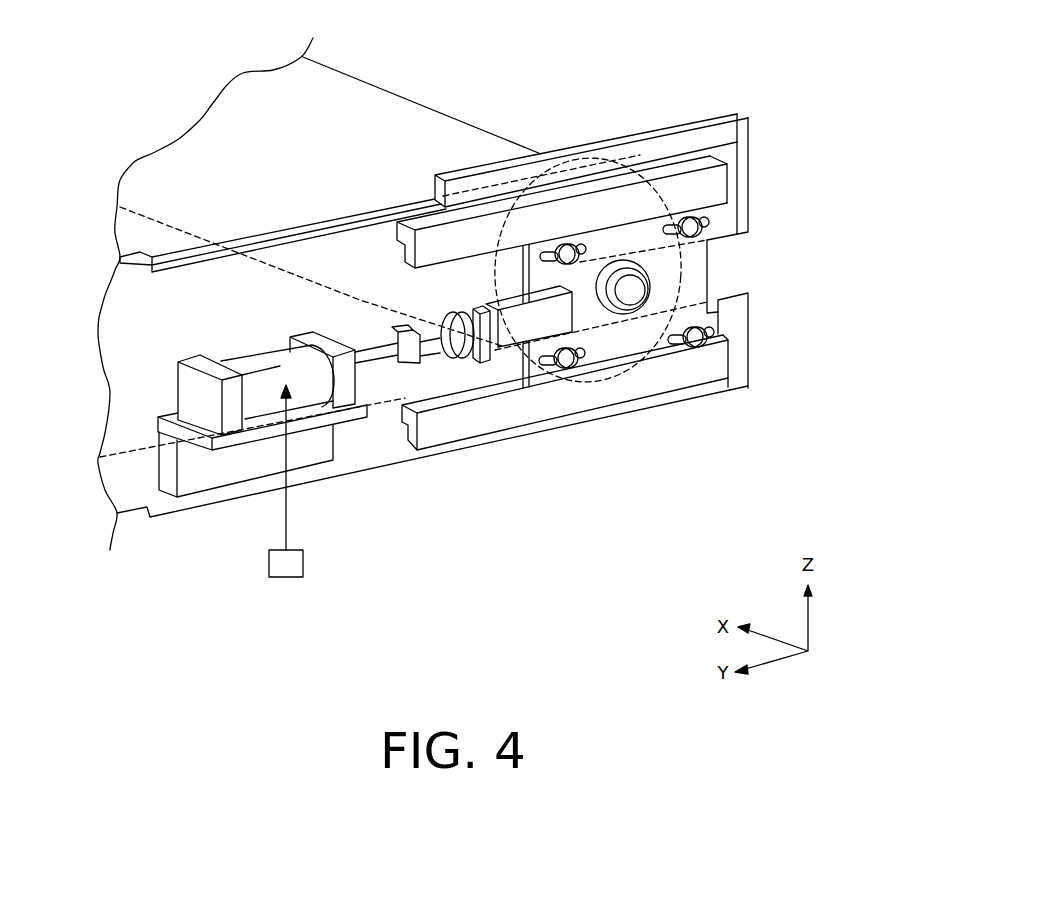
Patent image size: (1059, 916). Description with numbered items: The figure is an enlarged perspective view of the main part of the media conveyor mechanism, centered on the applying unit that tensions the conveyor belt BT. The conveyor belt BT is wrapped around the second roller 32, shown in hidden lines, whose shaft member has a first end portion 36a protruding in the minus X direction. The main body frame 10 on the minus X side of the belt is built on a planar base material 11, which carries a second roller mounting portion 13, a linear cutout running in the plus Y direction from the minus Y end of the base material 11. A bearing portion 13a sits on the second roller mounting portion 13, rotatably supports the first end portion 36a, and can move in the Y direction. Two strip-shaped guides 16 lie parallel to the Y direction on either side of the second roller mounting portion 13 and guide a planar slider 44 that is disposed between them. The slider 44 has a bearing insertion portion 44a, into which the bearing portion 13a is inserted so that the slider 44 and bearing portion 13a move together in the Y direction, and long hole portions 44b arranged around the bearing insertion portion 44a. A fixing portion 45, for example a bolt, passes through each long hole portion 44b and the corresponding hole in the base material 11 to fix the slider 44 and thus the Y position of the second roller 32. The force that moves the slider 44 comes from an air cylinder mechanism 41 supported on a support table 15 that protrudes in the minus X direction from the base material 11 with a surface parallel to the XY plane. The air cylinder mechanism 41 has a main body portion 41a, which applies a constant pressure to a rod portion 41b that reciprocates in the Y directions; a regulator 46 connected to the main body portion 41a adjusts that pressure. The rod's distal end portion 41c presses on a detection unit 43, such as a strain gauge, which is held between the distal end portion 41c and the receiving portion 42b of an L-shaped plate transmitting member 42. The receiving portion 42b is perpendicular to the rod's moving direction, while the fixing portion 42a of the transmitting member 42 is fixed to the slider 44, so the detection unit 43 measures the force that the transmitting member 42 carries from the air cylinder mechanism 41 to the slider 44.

The main body frame 10 is at (655, 125).
The base material 11 is at (633, 157).
The second roller mounting portion 13 is at (738, 235).
The bearing portion 13a is at (587, 372).
The support table 15 is at (198, 477).
The guides 16 is at (712, 188).
The second roller 32 is at (515, 185).
The first end portion 36a is at (632, 293).
The air cylinder mechanism 41 is at (354, 158).
The main body portion 41a is at (281, 366).
The rod portion 41b is at (382, 333).
The distal end portion 41c is at (430, 347).
The transmitting member 42 is at (515, 426).
The fixing portion 42a is at (531, 322).
The receiving portion 42b is at (486, 352).
The detection unit 43 is at (456, 360).
The slider 44 is at (697, 270).
The bearing insertion portion 44a is at (613, 258).
The long hole portion 44b is at (668, 230).
The fixing portion 45 is at (712, 233).
The regulator 46 is at (284, 577).
The conveyor belt BT is at (353, 100).